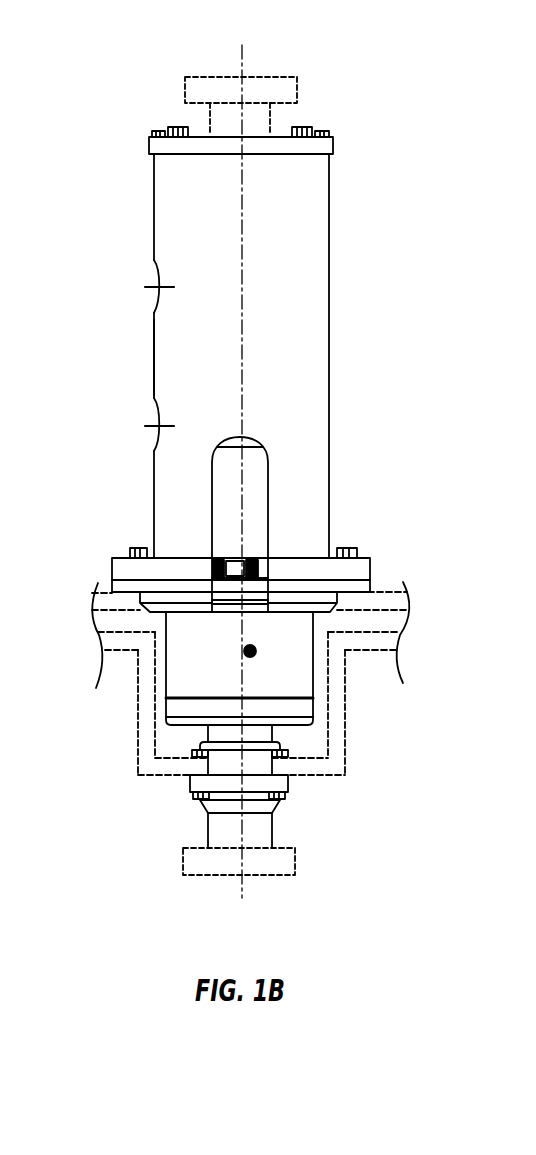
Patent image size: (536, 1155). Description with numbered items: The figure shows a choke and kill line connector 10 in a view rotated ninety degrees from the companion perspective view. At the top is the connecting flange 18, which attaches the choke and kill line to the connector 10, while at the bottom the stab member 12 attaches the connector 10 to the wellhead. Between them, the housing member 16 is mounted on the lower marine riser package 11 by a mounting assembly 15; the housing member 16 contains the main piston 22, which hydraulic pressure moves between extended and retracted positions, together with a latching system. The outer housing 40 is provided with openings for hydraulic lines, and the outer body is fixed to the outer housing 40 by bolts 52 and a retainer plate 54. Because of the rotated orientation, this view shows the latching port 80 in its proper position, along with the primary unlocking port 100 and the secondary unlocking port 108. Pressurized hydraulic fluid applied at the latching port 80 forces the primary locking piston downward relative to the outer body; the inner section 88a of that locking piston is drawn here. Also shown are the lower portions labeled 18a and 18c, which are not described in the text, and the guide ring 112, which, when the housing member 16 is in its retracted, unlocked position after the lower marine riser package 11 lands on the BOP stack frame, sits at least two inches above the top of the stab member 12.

The choke and kill line connector 10 is at (96, 106).
The lower marine riser package 11 is at (279, 678).
The stab member 12 is at (267, 800).
The mounting assembly 15 is at (212, 556).
The housing member 16 is at (207, 356).
The connecting flange 18 is at (208, 74).
The lower body portion 18a is at (191, 671).
The bottom plate 18c is at (191, 739).
The main piston 22 is at (299, 513).
The outer housing 40 is at (108, 351).
The bolts 52 is at (270, 105).
The retainer plate 54 is at (277, 115).
The latching port 80 is at (165, 519).
The inner section of primary locking piston 88a is at (288, 667).
The primary unlocking port 100 is at (313, 528).
The secondary unlocking port 108 is at (339, 598).
The guide ring 112 is at (288, 746).